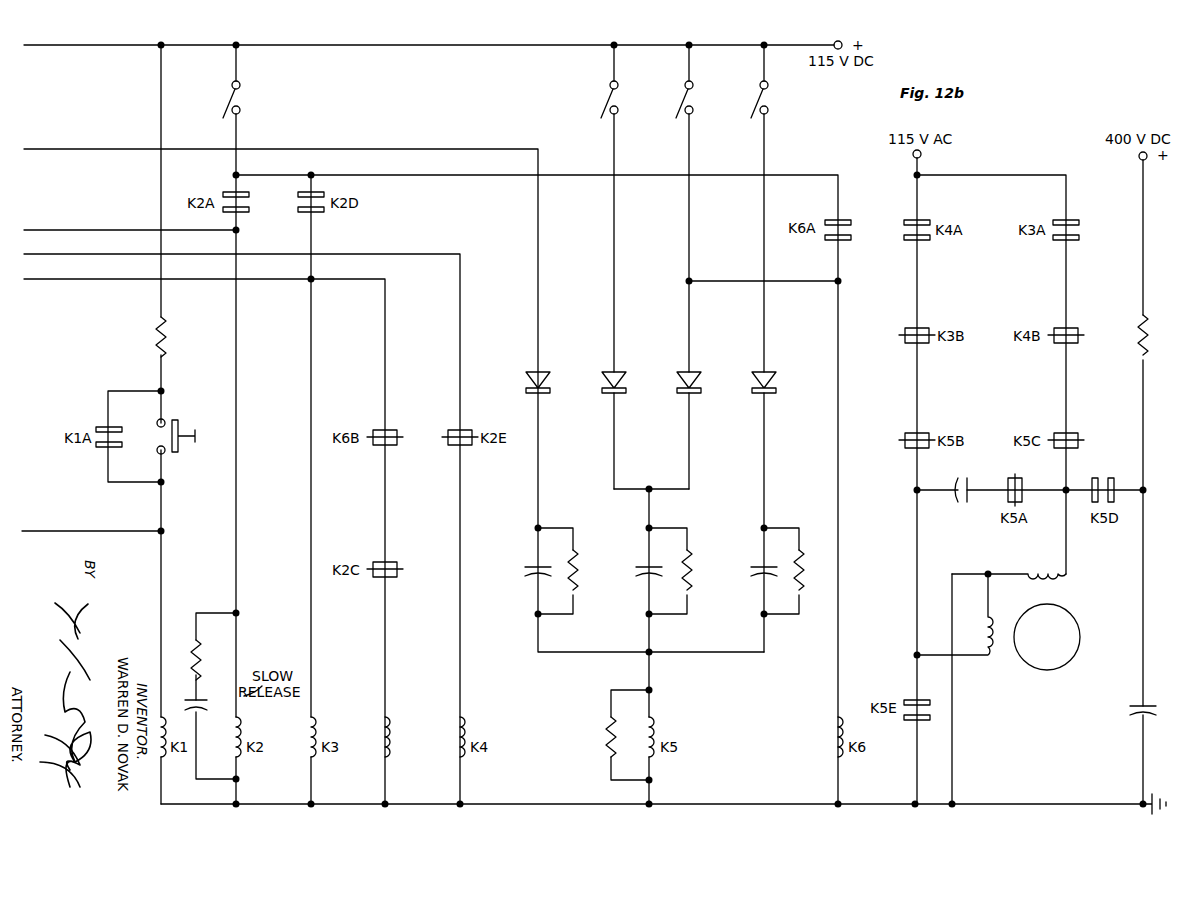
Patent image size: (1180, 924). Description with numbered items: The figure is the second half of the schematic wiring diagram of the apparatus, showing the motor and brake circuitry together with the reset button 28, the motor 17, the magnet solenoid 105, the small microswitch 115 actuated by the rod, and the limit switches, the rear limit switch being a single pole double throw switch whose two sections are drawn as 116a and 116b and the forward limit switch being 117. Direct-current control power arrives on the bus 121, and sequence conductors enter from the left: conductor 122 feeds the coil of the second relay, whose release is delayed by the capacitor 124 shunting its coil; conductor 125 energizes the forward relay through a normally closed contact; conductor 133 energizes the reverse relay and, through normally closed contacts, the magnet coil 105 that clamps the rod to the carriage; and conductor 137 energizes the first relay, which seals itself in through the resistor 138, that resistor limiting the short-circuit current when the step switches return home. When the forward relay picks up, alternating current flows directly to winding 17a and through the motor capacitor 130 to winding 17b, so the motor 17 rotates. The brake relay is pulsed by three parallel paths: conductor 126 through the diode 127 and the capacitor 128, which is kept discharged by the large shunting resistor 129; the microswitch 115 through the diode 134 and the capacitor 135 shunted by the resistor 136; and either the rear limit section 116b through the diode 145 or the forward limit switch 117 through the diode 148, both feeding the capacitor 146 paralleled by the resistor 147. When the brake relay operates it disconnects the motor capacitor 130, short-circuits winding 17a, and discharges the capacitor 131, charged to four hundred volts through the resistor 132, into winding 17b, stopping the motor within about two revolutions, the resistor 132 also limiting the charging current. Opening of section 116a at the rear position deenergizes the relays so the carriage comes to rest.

The D.C. control power supply bus 121 is at (36, 48).
The conductor 126 is at (36, 148).
The conductor 122 is at (36, 229).
The conductor 125 is at (36, 254).
The conductor 133 is at (36, 279).
The conductor 137 is at (36, 531).
The resistor 138 is at (167, 324).
The reset button 28 is at (182, 425).
The rear limit switch section 116a is at (230, 97).
The rear limit switch section 116b is at (605, 97).
The forward limit switch 117 is at (678, 97).
The microswitch 115 is at (754, 97).
The diode 127 is at (530, 365).
The diode 145 is at (606, 365).
The diode 148 is at (681, 365).
The diode 134 is at (758, 365).
The capacitor 128 is at (524, 577).
The shunting resistor 129 is at (580, 560).
The capacitor 146 is at (649, 577).
The resistor 147 is at (693, 560).
The capacitor 135 is at (760, 577).
The resistor 136 is at (801, 550).
The magnet solenoid 105 is at (387, 725).
The capacitor 124 is at (195, 644).
The resistor 132 is at (1147, 353).
The motor capacitor 130 is at (962, 510).
The motor winding 17b is at (1038, 574).
The motor winding 17a is at (998, 658).
The motor 17 is at (1071, 662).
The capacitor 131 is at (1136, 715).